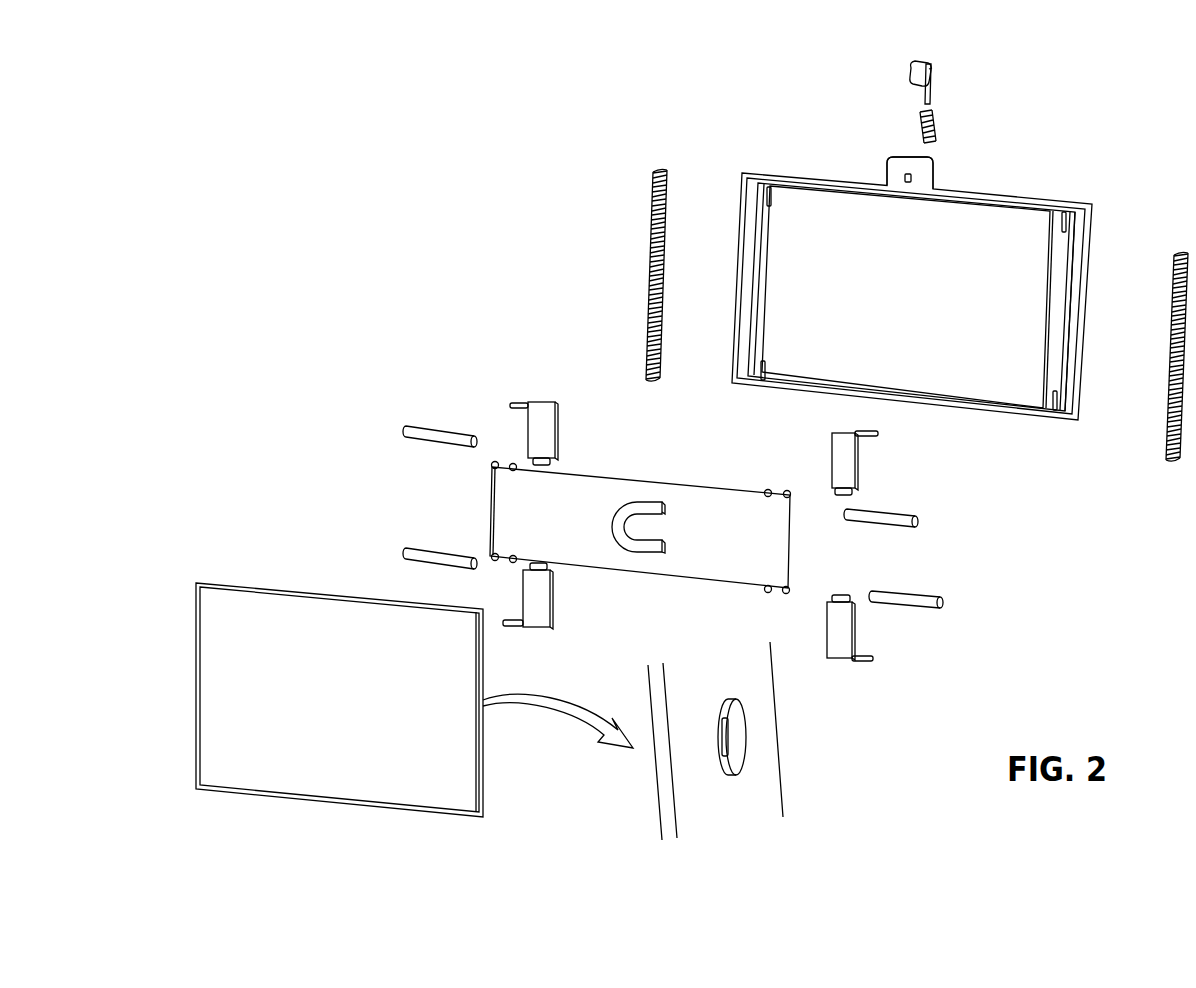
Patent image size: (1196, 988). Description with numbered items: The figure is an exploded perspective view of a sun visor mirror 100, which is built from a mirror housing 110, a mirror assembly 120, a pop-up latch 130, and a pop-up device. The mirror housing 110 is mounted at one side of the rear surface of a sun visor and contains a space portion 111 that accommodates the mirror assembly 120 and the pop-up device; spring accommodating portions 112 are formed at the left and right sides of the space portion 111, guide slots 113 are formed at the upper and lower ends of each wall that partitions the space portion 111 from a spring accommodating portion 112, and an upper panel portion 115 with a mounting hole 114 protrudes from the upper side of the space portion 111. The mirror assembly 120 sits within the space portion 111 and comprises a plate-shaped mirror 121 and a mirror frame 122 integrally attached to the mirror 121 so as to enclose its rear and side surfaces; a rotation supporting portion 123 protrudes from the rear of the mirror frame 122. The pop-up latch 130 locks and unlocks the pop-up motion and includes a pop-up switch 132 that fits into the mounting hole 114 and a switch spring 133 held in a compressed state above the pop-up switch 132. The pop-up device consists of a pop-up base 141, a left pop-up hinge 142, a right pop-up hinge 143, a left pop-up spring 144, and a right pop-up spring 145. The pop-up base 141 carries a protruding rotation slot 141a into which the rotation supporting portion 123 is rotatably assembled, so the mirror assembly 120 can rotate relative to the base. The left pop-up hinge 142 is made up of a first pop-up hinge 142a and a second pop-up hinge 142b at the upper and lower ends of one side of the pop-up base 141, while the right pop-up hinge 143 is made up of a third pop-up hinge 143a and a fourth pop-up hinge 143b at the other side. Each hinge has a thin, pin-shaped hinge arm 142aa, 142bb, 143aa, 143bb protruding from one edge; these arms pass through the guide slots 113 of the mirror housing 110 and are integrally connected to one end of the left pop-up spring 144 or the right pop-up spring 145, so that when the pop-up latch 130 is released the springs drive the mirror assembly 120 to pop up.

The sun visor mirror 100 is at (422, 193).
The mirror housing 110 is at (907, 275).
The space portion 111 is at (1023, 222).
The spring accommodating portion 112 is at (1063, 378).
The guide slot 113 is at (765, 190).
The mounting hole 114 is at (905, 178).
The upper panel portion 115 is at (892, 160).
The mirror assembly 120 is at (528, 614).
The mirror 121 is at (293, 597).
The mirror frame 122 is at (251, 572).
The rotation supporting portion 123 is at (737, 738).
The pop-up latch 130 is at (983, 85).
The pop-up switch 132 is at (933, 82).
The switch spring 133 is at (933, 122).
The pop-up base 141 is at (640, 526).
The rotation slot 141a is at (642, 553).
The left pop-up hinge 142 is at (470, 504).
The first pop-up hinge 142a is at (526, 395).
The hinge arm 142aa is at (512, 403).
The second pop-up hinge 142b is at (450, 623).
The hinge arm 142bb is at (512, 627).
The right pop-up hinge 143 is at (917, 572).
The third pop-up hinge 143a is at (919, 463).
The hinge arm 143aa is at (872, 434).
The fourth pop-up hinge 143b is at (914, 654).
The hinge arm 143bb is at (870, 661).
The left pop-up spring 144 is at (656, 203).
The right pop-up spring 145 is at (1173, 462).